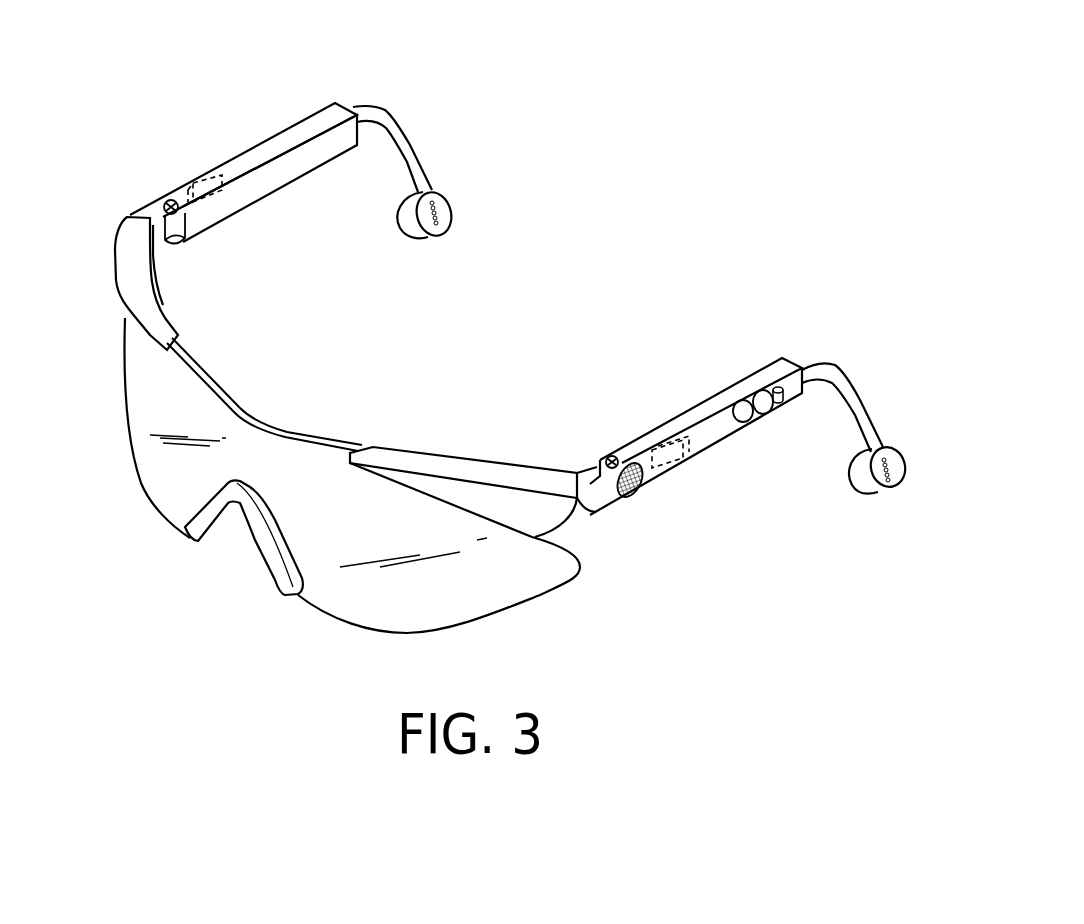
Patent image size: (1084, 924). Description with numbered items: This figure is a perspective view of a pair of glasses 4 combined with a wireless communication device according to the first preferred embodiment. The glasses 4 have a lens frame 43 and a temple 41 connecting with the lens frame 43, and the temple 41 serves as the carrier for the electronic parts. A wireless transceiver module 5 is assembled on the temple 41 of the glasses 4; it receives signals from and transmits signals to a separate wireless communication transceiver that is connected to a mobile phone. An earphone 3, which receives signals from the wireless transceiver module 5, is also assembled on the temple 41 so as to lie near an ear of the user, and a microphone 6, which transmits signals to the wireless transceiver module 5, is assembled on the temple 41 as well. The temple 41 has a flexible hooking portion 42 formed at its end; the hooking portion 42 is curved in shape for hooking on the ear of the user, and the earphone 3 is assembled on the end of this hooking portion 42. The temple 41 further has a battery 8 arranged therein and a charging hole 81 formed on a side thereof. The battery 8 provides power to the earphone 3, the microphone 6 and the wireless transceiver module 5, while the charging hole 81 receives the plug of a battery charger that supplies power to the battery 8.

The earphone 3 is at (441, 206).
The glasses 4 is at (225, 583).
The wireless transceiver module 5 is at (200, 182).
The microphone 6 is at (162, 200).
The battery 8 is at (755, 420).
The charging hole 81 is at (782, 408).
The temple 41 is at (272, 147).
The hooking portion 42 is at (413, 150).
The lens frame 43 is at (277, 457).